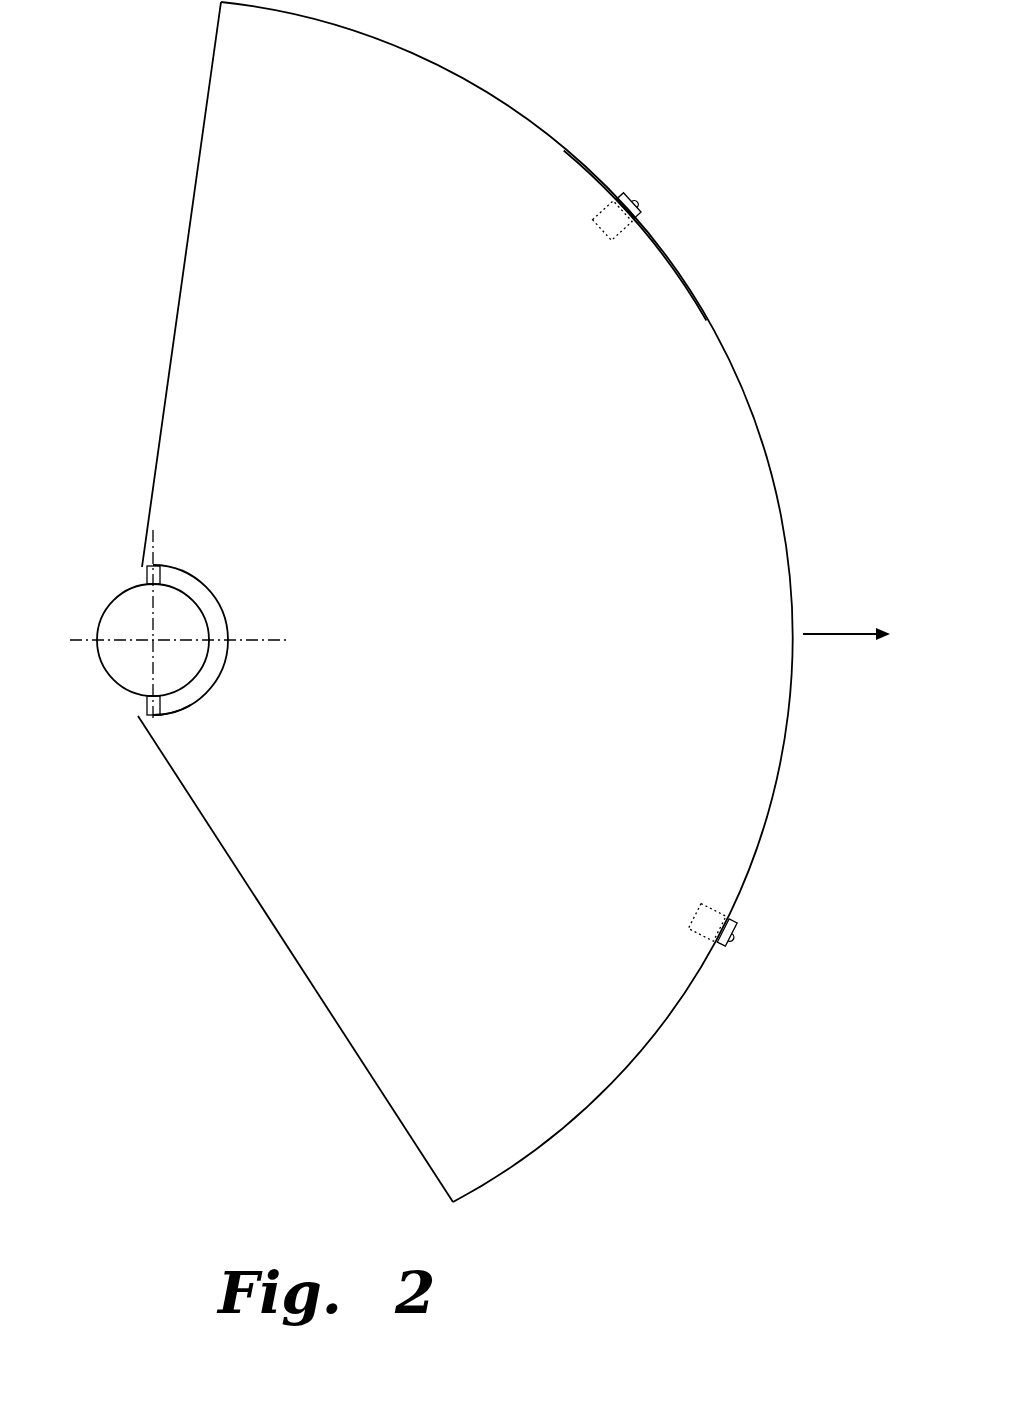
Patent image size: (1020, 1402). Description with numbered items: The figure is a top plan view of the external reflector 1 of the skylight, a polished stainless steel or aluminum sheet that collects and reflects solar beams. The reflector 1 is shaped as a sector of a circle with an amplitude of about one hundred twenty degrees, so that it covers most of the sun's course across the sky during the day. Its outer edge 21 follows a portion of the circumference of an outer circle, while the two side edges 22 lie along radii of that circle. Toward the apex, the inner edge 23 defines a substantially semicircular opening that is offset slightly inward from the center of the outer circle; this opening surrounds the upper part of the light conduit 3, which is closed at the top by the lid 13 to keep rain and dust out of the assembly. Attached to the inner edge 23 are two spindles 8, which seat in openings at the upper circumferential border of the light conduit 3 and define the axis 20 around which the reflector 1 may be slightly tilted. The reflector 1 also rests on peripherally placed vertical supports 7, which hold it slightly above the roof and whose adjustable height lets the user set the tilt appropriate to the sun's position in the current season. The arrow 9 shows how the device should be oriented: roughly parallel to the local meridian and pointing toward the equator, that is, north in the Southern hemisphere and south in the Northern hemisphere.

The external reflector 1 is at (700, 855).
The light conduit 3 is at (107, 722).
The vertical supports 7 is at (647, 213).
The spindles 8 is at (147, 577).
The arrow 9 is at (846, 622).
The lid 13 is at (112, 670).
The axis 20 is at (152, 638).
The outer edge 21 is at (698, 298).
The side edges 22 is at (146, 503).
The inner edge 23 is at (190, 708).